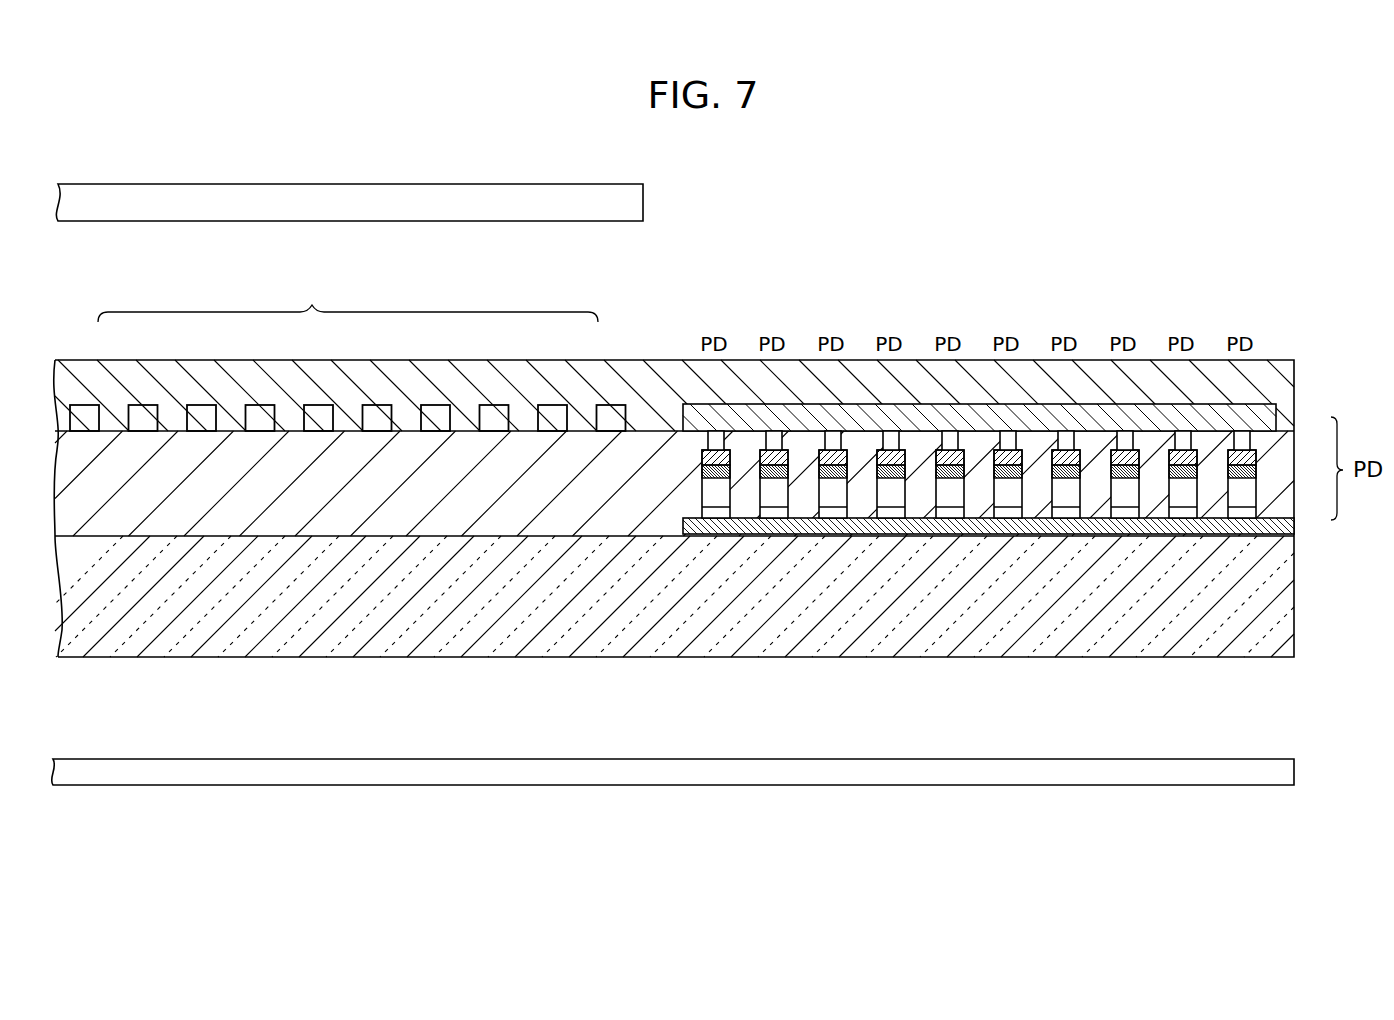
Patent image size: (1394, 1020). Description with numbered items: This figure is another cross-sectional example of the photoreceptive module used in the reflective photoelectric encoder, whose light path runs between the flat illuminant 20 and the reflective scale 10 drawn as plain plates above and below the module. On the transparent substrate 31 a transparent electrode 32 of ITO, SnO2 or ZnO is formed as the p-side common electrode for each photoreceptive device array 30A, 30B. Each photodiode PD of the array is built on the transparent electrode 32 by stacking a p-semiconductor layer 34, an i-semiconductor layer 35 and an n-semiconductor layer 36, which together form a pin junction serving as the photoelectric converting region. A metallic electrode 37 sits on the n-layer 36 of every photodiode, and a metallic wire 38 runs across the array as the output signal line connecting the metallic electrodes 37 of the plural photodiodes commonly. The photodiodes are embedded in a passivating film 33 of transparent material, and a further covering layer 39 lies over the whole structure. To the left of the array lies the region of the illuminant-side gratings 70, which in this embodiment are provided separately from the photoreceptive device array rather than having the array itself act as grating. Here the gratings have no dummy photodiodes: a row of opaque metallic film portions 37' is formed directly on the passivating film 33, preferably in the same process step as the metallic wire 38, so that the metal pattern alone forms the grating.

The reflective scale 10 is at (430, 786).
The flat illuminant 20 is at (268, 193).
The photoreceptive device array 30A is at (983, 300).
The photoreceptive device array 30B is at (674, 508).
The transparent substrate 31 is at (1284, 607).
The transparent electrode 32 is at (1277, 527).
The passivating film 33 is at (653, 447).
The p-semiconductor layer 34 is at (1250, 514).
The i-semiconductor layer 35 is at (1252, 494).
The n-semiconductor layer 36 is at (1258, 464).
The metallic electrode 37 is at (1020, 436).
The electrode 37' is at (348, 376).
The metallic wire 38 is at (1100, 413).
The protective layer 39 is at (1210, 365).
The illuminant-side gratings 70 is at (348, 301).